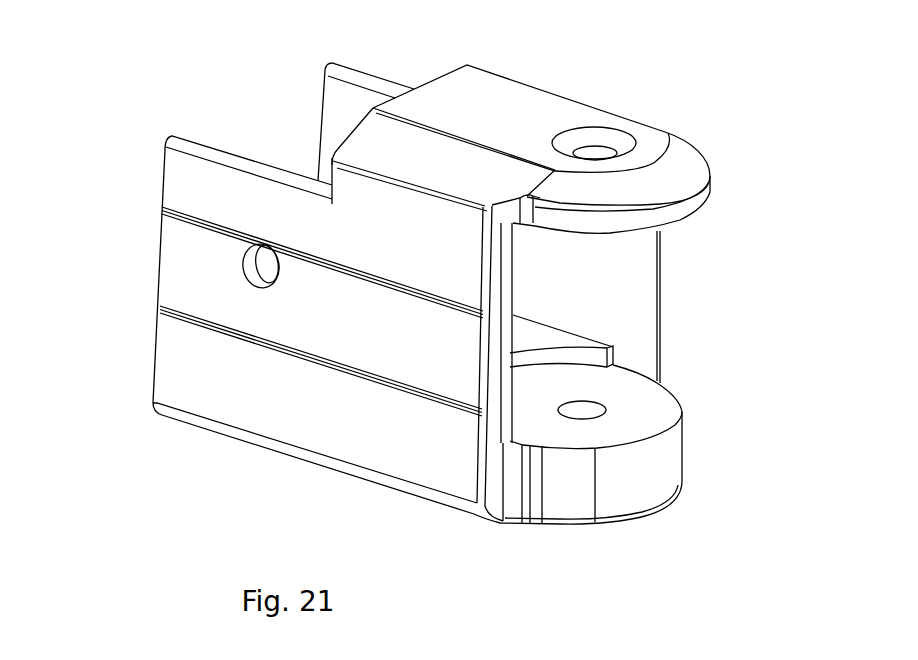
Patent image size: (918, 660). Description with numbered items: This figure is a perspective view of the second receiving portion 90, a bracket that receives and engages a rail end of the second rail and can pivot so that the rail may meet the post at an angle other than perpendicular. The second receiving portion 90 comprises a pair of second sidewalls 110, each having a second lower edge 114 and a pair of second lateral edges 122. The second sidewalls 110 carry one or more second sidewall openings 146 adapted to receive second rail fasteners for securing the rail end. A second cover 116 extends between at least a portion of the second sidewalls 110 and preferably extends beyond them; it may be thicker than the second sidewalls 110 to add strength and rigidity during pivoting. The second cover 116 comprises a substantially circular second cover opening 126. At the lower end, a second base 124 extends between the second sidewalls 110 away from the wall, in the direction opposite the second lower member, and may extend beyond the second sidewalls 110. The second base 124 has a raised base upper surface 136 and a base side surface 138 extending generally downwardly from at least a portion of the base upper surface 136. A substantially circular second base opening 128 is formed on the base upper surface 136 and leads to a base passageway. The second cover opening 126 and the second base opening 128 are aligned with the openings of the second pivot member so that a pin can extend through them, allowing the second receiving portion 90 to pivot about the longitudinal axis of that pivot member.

The second receiving portion 90 is at (797, 98).
The second sidewalls 110 is at (188, 367).
The second lower edge 114 is at (260, 443).
The second cover 116 is at (520, 107).
The second lateral edges 122 is at (155, 262).
The second base 124 is at (656, 418).
The second cover opening 126 is at (603, 138).
The second base opening 128 is at (593, 410).
The base upper surface 136 is at (524, 393).
The base side surface 138 is at (637, 487).
The second sidewall openings 146 is at (268, 262).